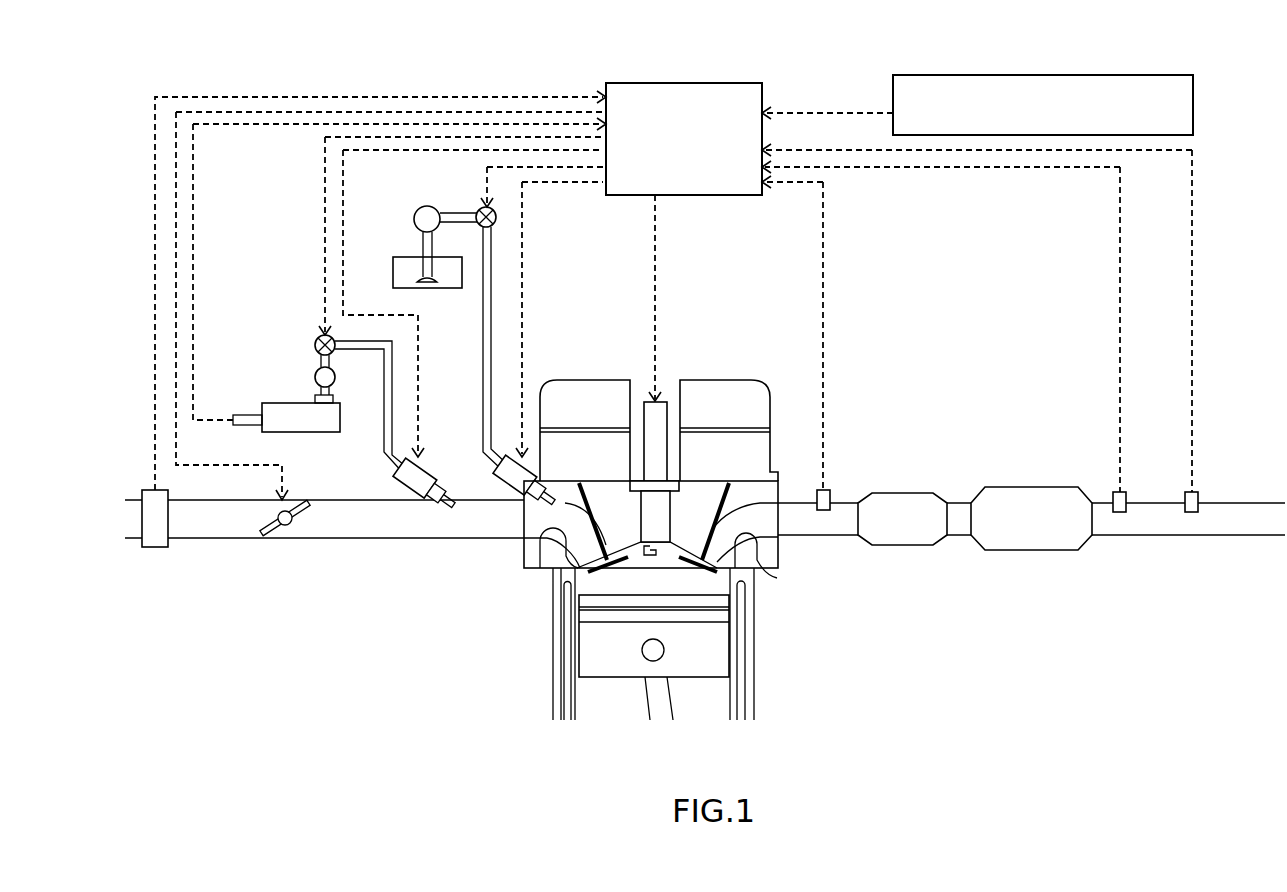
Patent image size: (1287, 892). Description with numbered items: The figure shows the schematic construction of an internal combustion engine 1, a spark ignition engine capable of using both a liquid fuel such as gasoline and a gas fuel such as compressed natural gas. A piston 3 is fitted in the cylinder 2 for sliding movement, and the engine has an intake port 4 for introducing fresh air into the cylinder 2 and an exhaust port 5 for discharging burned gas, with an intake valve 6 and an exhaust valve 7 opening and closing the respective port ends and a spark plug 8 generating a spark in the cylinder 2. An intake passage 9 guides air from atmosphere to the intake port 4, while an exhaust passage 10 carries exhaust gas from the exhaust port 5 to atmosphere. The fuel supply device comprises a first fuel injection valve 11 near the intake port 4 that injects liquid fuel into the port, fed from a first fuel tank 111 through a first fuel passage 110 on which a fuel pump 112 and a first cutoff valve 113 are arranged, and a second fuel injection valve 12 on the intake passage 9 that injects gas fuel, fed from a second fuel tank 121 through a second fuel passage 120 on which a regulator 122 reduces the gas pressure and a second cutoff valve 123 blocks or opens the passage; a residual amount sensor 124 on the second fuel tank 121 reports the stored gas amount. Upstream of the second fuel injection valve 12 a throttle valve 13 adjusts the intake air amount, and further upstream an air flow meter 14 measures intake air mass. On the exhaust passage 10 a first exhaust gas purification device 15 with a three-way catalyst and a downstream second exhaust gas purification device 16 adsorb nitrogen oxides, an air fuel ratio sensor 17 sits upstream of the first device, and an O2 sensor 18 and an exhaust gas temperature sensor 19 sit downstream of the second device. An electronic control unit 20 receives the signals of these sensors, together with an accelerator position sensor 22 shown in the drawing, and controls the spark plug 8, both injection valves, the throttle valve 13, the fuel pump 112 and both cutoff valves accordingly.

The internal combustion engine 1 is at (785, 655).
The cylinder 2 is at (578, 694).
The piston 3 is at (698, 663).
The intake port 4 is at (547, 540).
The exhaust port 5 is at (775, 568).
The intake valve 6 is at (610, 528).
The exhaust valve 7 is at (695, 530).
The spark plug 8 is at (668, 408).
The intake passage 9 is at (377, 540).
The exhaust passage 10 is at (825, 537).
The first fuel injection valve 11 is at (515, 498).
The second fuel injection valve 12 is at (430, 463).
The throttle valve 13 is at (270, 535).
The air flow meter 14 is at (155, 548).
The first exhaust gas purification device 15 is at (905, 493).
The second exhaust gas purification device 16 is at (1020, 487).
The air fuel ratio sensor 17 is at (830, 490).
The O2 sensor 18 is at (1126, 492).
The exhaust gas temperature sensor 19 is at (1198, 492).
The electronic control unit 20 is at (697, 195).
The accelerator position sensor 22 is at (1193, 100).
The first fuel passage 110 is at (483, 325).
The first fuel tank 111 is at (410, 257).
The fuel pump 112 is at (416, 212).
The first cutoff valve 113 is at (478, 210).
The second fuel passage 120 is at (383, 440).
The second fuel tank 121 is at (290, 403).
The regulator 122 is at (315, 372).
The second cutoff valve 123 is at (318, 338).
The residual amount sensor 124 is at (240, 426).